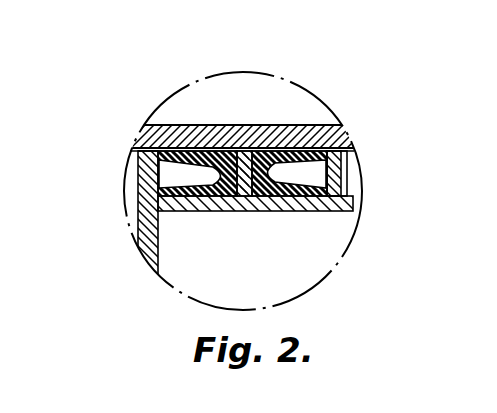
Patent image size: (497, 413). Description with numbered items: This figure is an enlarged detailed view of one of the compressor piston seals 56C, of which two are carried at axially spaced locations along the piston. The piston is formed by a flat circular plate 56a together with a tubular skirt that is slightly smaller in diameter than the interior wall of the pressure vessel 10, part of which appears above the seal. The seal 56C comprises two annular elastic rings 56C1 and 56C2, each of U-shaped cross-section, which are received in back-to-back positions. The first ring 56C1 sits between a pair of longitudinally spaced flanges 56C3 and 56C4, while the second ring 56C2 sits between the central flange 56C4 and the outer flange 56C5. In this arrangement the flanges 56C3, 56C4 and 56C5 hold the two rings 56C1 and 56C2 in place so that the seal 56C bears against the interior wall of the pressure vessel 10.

The pressure vessel 10 is at (156, 124).
The flat circular plate 56a is at (143, 238).
The seal 56C is at (266, 147).
The annular elastic ring 56C1 is at (199, 194).
The annular elastic ring 56C2 is at (297, 189).
The flange 56C3 is at (345, 168).
The flange 56C4 is at (247, 150).
The flange 56C5 is at (140, 151).